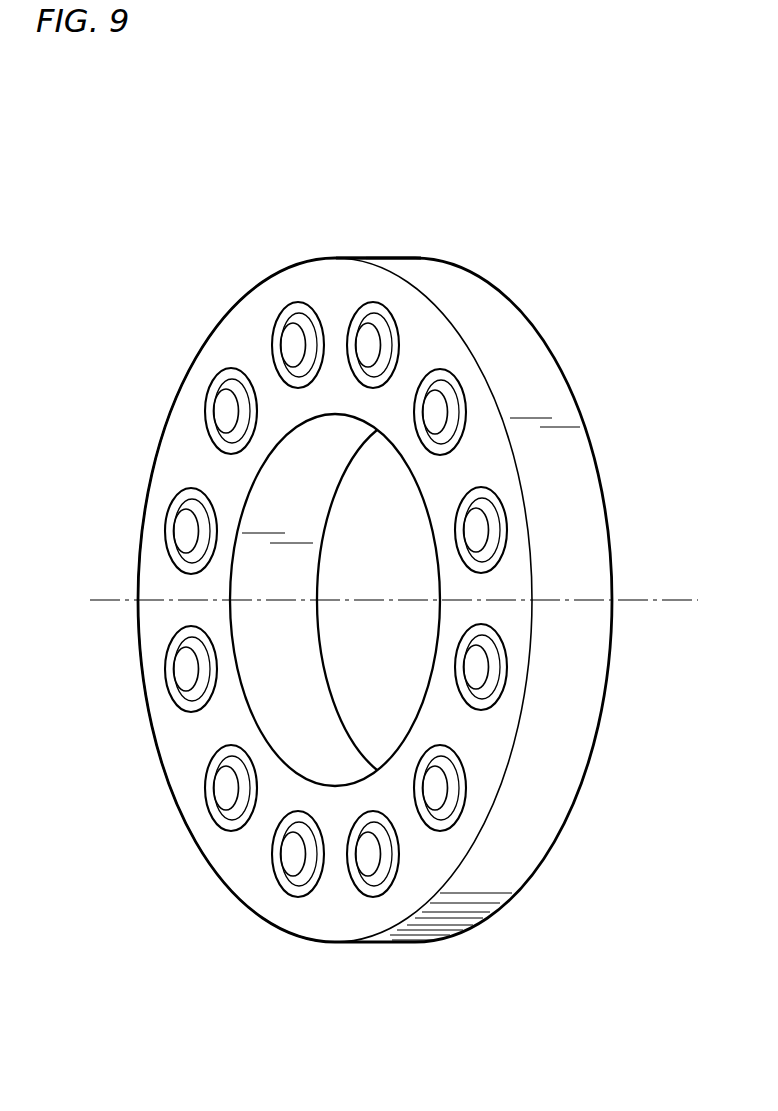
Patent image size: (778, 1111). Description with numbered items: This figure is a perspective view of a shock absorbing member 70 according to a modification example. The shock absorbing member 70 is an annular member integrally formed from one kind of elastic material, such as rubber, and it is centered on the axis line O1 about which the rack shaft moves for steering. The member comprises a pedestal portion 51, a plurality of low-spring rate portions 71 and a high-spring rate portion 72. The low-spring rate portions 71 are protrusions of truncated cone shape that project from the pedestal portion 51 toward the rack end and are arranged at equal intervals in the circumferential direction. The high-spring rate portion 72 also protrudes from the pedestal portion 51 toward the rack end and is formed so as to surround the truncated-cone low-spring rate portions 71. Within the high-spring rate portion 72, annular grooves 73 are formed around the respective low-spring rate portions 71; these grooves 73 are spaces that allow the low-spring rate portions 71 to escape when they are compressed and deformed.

The shock absorbing member 70 is at (111, 191).
The low-spring rate portions 71 is at (370, 347).
The annular grooves 73 is at (230, 442).
The high-spring rate portion 72 is at (366, 254).
The pedestal portion 51 is at (421, 254).
The axis line O1 is at (377, 601).